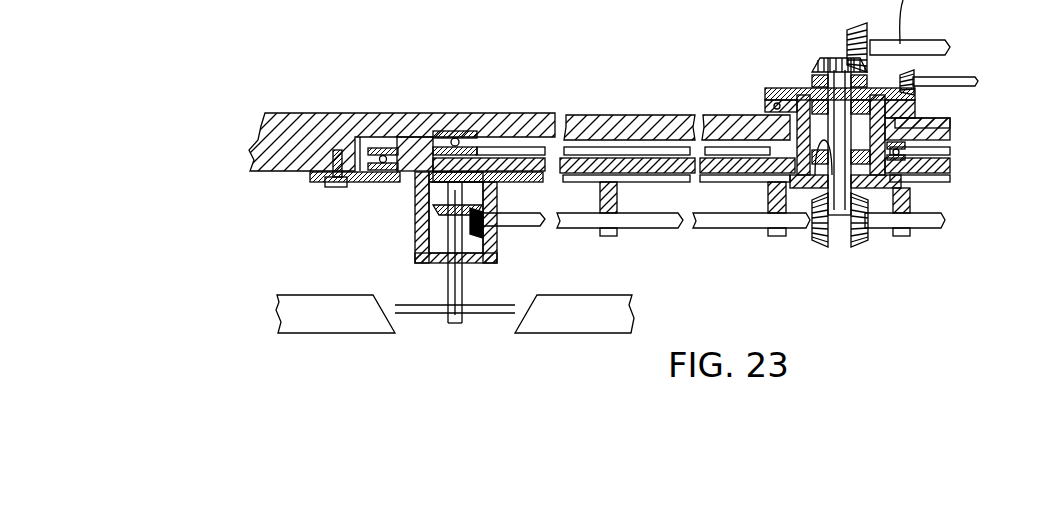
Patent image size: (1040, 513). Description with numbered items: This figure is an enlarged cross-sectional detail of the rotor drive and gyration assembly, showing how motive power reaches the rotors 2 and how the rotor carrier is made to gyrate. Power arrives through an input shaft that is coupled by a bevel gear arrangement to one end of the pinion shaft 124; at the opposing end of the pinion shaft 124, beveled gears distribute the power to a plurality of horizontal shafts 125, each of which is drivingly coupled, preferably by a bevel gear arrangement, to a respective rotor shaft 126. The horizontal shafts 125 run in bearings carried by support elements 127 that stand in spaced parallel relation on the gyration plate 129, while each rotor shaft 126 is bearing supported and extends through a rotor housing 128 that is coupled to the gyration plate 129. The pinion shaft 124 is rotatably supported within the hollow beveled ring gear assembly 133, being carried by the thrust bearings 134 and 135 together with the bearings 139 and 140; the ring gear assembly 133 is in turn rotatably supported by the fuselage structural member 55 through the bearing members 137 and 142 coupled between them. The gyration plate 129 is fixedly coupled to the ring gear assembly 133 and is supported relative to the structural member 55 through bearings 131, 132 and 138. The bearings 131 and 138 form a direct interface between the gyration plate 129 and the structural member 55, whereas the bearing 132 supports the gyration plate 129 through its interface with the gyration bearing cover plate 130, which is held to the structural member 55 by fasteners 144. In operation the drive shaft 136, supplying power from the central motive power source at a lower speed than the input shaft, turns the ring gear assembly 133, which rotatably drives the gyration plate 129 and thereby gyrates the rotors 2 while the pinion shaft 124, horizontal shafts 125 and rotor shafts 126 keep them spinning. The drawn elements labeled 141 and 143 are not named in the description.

The rotor 2 is at (303, 302).
The fuselage structural member 55 is at (268, 170).
The pinion shaft 124 is at (822, 58).
The horizontal shaft 125 is at (523, 222).
The rotor shaft 126 is at (463, 292).
The support element 127 is at (605, 232).
The rotor housing 128 is at (416, 242).
The gyration plate 129 is at (740, 168).
The gyration bearing cover plate 130 is at (382, 178).
The bearing 131 is at (456, 138).
The bearing 132 is at (382, 150).
The hollow beveled ring gear assembly 133 is at (770, 88).
The thrust bearing 134 is at (905, 176).
The thrust bearing 135 is at (870, 62).
The drive shaft 136 is at (962, 77).
The bearing member 137 is at (766, 106).
The bearing 138 is at (903, 150).
The bearing 139 is at (917, 137).
The bearing 140 is at (838, 222).
The support post 141 is at (872, 200).
The bearing member 142 is at (923, 135).
The bevel gear 143 is at (490, 178).
The fastener 144 is at (322, 184).